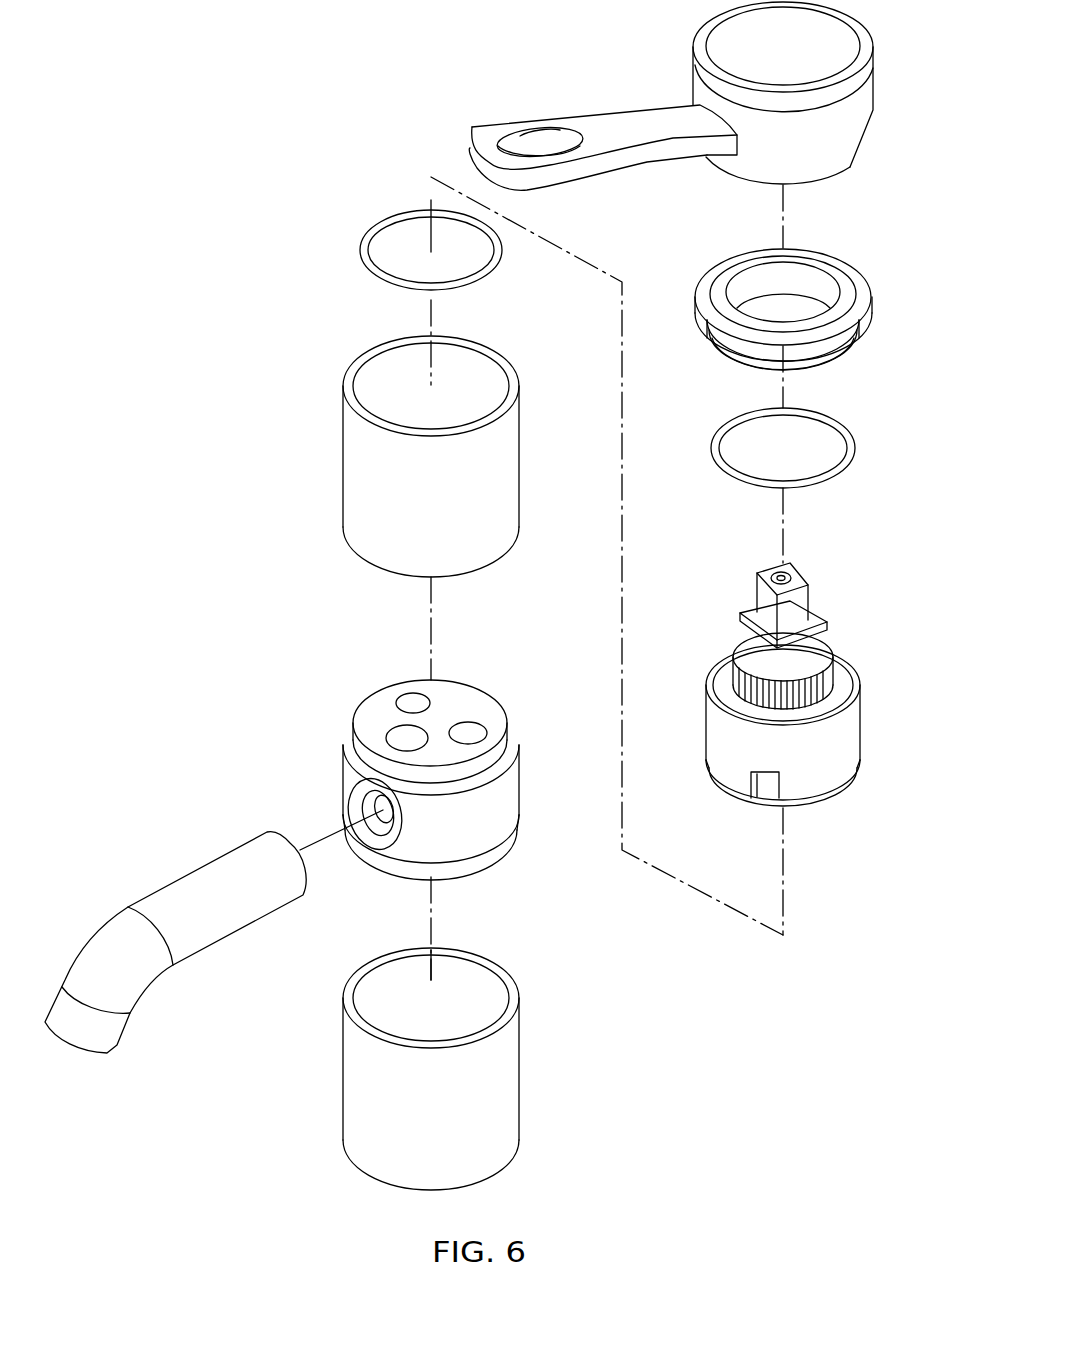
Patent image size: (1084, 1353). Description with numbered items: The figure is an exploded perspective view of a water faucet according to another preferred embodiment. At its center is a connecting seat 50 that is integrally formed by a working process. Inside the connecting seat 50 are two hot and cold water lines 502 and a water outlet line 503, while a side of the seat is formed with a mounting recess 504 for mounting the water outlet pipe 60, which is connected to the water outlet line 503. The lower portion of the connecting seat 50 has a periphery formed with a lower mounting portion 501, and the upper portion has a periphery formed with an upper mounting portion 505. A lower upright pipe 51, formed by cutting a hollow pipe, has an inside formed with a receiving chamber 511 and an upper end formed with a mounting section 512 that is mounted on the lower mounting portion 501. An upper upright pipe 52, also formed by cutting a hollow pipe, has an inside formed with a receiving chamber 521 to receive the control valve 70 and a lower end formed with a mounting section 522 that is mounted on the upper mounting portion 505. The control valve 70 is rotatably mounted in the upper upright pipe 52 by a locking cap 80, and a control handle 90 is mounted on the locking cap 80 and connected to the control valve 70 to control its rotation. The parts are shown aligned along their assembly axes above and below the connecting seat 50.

The control handle 90 is at (662, 70).
The locking cap 80 is at (862, 266).
The control valve 70 is at (866, 718).
The water outlet pipe 60 is at (145, 1020).
The connecting seat 50 is at (332, 754).
The lower mounting portion 501 is at (479, 870).
The water lines 502 is at (410, 700).
The water outlet line 503 is at (400, 738).
The mounting recess 504 is at (347, 808).
The upper mounting portion 505 is at (490, 780).
The lower upright pipe 51 is at (535, 1089).
The receiving chamber 511 is at (417, 1020).
The mounting section 512 is at (357, 1007).
The upper upright pipe 52 is at (338, 374).
The receiving chamber 521 is at (407, 368).
The mounting section 522 is at (378, 568).